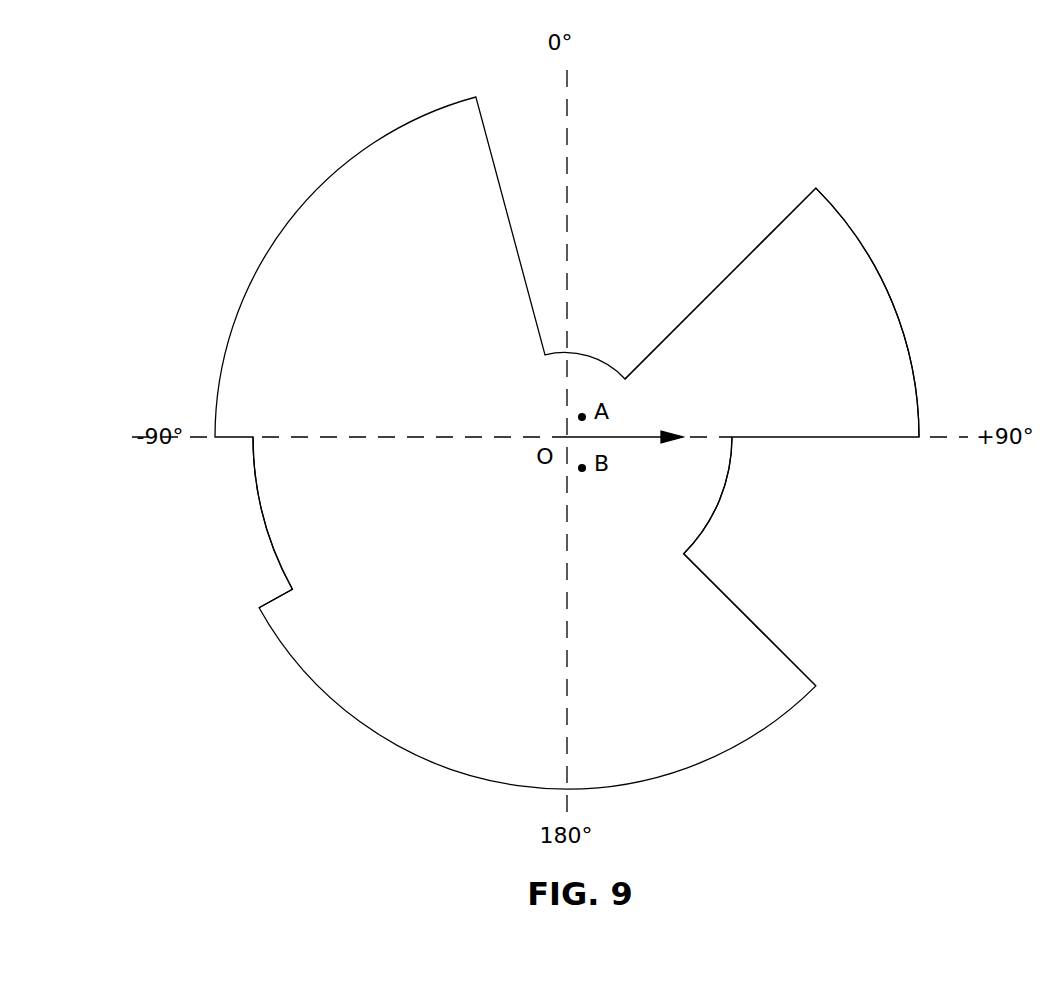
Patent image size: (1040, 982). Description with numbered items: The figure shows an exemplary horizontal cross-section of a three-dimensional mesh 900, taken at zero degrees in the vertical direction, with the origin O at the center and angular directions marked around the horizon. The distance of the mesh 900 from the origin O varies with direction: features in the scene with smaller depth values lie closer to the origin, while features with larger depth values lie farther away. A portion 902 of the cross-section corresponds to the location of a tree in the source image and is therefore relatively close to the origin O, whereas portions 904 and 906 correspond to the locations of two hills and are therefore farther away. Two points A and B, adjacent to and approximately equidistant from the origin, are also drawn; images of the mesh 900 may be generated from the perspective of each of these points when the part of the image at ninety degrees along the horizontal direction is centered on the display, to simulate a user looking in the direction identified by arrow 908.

The mesh 900 is at (283, 228).
The portion of the horizontal cross-section 902 is at (610, 367).
The portion of the horizontal cross-section 904 is at (725, 482).
The portion of the horizontal cross-section 906 is at (258, 510).
The arrow 908 is at (662, 427).